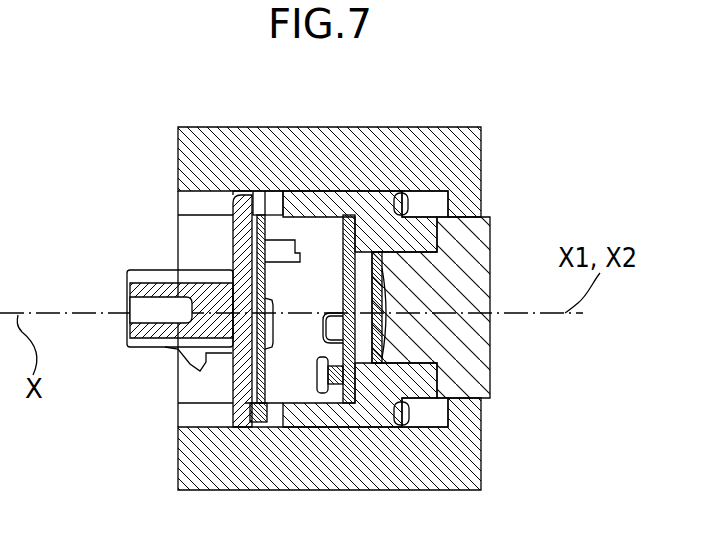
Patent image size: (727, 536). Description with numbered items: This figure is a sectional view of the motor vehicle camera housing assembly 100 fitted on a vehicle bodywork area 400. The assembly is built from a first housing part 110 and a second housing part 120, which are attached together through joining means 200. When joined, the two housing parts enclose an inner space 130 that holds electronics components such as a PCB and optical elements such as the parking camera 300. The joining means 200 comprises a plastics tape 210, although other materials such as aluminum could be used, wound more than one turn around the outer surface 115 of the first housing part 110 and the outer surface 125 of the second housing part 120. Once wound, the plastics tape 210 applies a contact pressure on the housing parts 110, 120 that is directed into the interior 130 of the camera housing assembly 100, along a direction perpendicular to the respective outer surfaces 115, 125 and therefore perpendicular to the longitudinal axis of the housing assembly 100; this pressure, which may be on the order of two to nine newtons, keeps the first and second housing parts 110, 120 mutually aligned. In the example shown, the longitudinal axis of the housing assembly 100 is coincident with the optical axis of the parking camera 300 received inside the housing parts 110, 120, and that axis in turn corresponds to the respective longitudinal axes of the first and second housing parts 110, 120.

The motor vehicle camera housing assembly 100 is at (317, 279).
The first housing part 110 is at (392, 191).
The outer surface of the first housing part 115 is at (345, 191).
The second housing part 120 is at (256, 405).
The outer surface of the second housing part 125 is at (235, 193).
The inner space 130 is at (233, 263).
The joining means 200 is at (258, 182).
The plastics tape 210 is at (283, 191).
The parking camera 300 is at (486, 218).
The vehicle bodywork area 400 is at (468, 135).